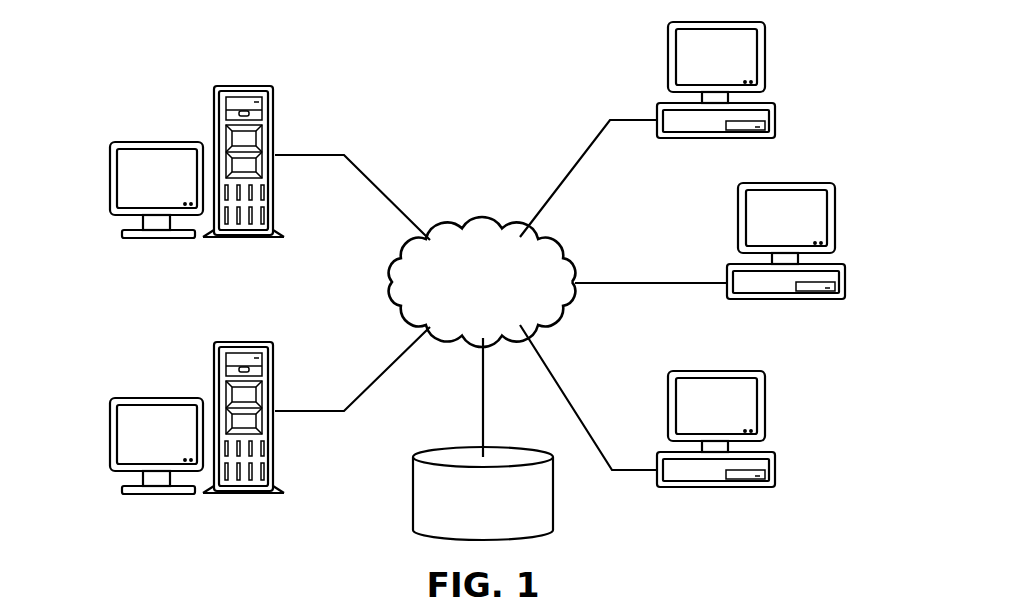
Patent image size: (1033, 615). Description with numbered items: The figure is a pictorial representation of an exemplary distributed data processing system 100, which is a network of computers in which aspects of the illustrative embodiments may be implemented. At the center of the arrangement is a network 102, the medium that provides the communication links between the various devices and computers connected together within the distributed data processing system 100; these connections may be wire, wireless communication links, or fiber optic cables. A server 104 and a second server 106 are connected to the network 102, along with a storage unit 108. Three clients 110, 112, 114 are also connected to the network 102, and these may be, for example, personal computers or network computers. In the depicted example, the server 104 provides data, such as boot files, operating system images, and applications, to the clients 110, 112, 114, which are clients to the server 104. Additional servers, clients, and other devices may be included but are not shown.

The distributed data processing system 100 is at (352, 69).
The network 102 is at (455, 230).
The server 104 is at (110, 181).
The server 106 is at (109, 434).
The storage unit 108 is at (413, 490).
The client 110 is at (777, 109).
The client 112 is at (846, 295).
The client 114 is at (776, 478).